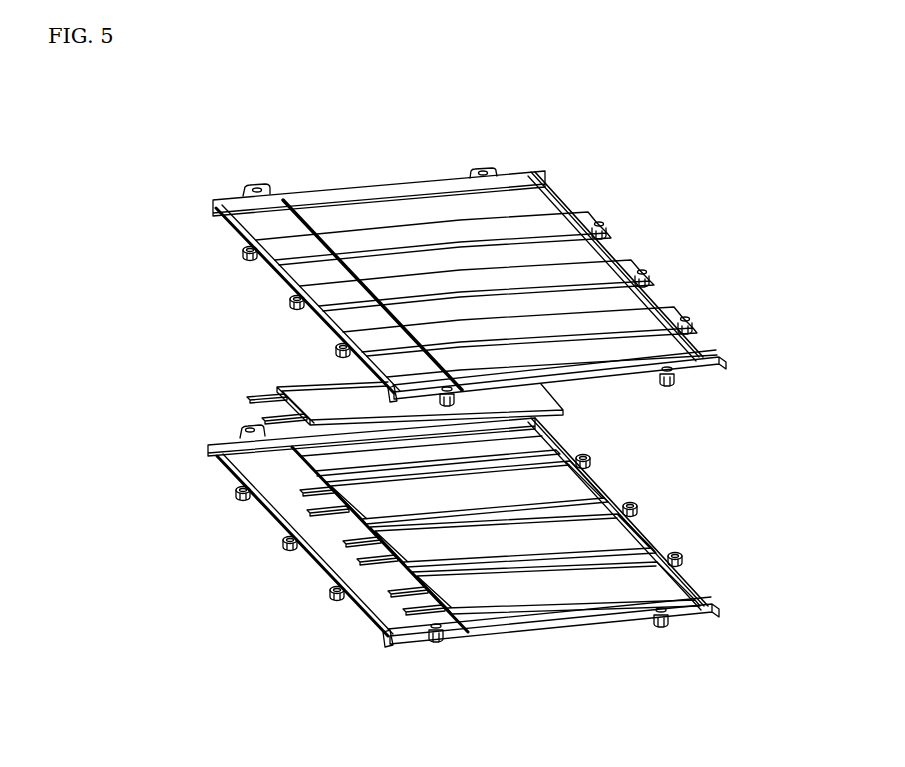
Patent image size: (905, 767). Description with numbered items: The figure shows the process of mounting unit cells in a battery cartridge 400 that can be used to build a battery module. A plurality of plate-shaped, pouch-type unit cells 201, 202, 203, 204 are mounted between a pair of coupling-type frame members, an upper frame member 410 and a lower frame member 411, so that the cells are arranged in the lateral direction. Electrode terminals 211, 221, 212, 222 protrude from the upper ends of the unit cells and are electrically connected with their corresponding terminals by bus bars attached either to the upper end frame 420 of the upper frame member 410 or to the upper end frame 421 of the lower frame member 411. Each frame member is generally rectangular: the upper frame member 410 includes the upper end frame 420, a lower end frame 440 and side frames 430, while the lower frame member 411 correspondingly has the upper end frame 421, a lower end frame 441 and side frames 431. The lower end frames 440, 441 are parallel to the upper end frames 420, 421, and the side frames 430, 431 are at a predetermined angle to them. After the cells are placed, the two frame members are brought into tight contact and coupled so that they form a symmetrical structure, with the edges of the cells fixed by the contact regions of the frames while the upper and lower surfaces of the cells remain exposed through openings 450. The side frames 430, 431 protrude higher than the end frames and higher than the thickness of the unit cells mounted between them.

The battery cartridge 400 is at (167, 123).
The upper frame member 410 is at (166, 217).
The lower frame member 411 is at (260, 615).
The upper end frame 420 is at (281, 210).
The upper end frame 421 is at (390, 627).
The side frame 430 is at (433, 226).
The side frame 431 is at (607, 562).
The lower end frame 440 is at (556, 189).
The lower end frame 441 is at (693, 582).
The opening 450 is at (565, 252).
The unit cell 201 is at (575, 401).
The unit cell 202 is at (506, 500).
The unit cell 203 is at (538, 549).
The unit cell 204 is at (568, 597).
The electrode terminal 211 is at (250, 397).
The electrode terminal 212 is at (240, 424).
The electrode terminal 221 is at (296, 492).
The electrode terminal 222 is at (303, 514).